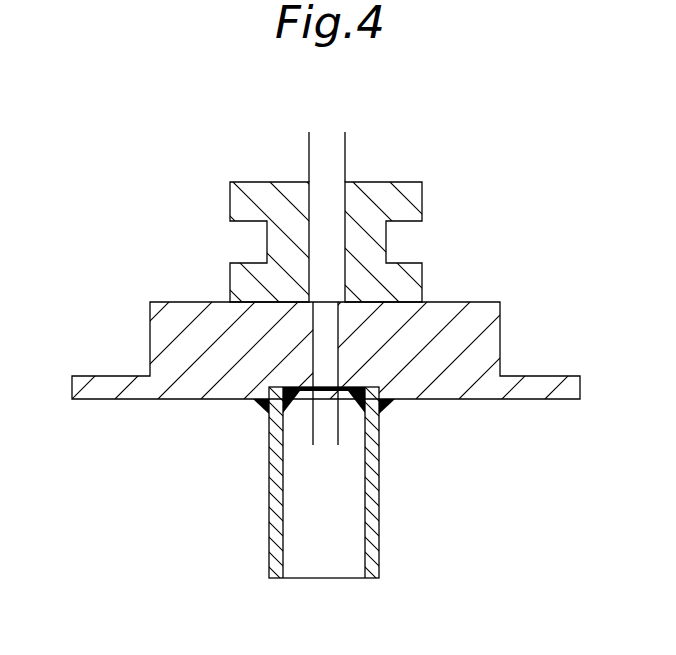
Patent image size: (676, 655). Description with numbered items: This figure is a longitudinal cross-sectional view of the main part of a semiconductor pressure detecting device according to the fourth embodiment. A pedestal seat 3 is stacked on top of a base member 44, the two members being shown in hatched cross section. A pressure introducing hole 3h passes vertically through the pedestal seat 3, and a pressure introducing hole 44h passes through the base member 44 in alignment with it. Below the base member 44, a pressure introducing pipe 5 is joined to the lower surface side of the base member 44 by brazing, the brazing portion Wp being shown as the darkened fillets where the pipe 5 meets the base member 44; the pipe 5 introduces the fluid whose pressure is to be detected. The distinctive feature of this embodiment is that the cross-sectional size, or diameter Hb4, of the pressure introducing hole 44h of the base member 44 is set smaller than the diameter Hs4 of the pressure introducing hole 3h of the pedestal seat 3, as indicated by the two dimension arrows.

The pedestal seat 3 is at (424, 200).
The pressure introducing hole 3h is at (309, 230).
The base member 44 is at (471, 303).
The pressure introducing hole 44h is at (313, 338).
The pressure introducing pipe 5 is at (379, 512).
The brazing portion Wp is at (253, 401).
The diameter Hs4 is at (383, 143).
The diameter Hb4 is at (362, 435).